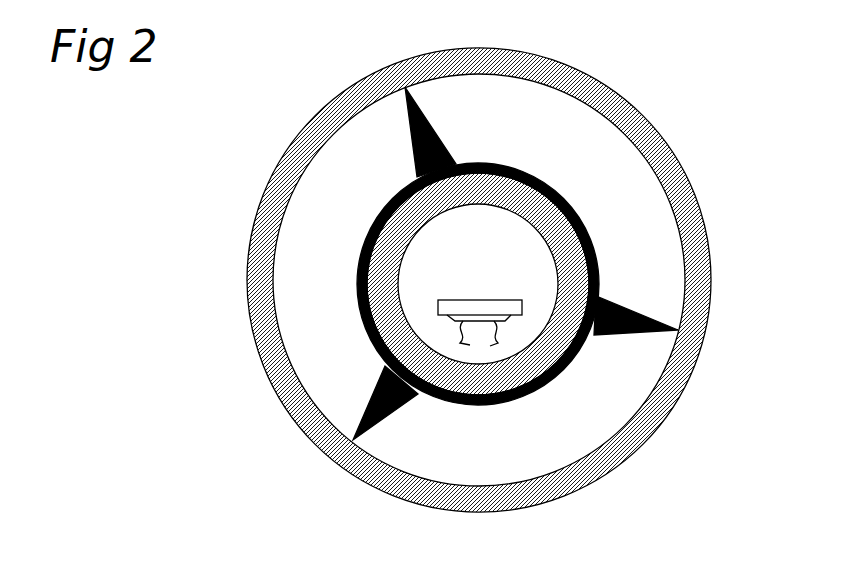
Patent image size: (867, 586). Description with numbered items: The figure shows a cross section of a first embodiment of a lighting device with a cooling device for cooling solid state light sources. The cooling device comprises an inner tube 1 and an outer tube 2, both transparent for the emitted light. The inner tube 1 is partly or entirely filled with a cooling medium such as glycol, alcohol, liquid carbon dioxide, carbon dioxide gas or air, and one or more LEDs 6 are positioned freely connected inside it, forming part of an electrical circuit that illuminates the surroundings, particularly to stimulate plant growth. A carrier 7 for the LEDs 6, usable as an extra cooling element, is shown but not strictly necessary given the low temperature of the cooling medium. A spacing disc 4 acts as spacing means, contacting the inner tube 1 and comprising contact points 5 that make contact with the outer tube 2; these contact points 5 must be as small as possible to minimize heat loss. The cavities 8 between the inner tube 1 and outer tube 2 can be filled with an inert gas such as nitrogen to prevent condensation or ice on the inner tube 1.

The inner tube 1 is at (372, 238).
The outer tube 2 is at (332, 108).
The spacing disc 4 is at (361, 291).
The contact points 5 is at (420, 112).
The LEDs 6 is at (479, 336).
The carrier 7 is at (488, 300).
The cavities 8 is at (522, 118).